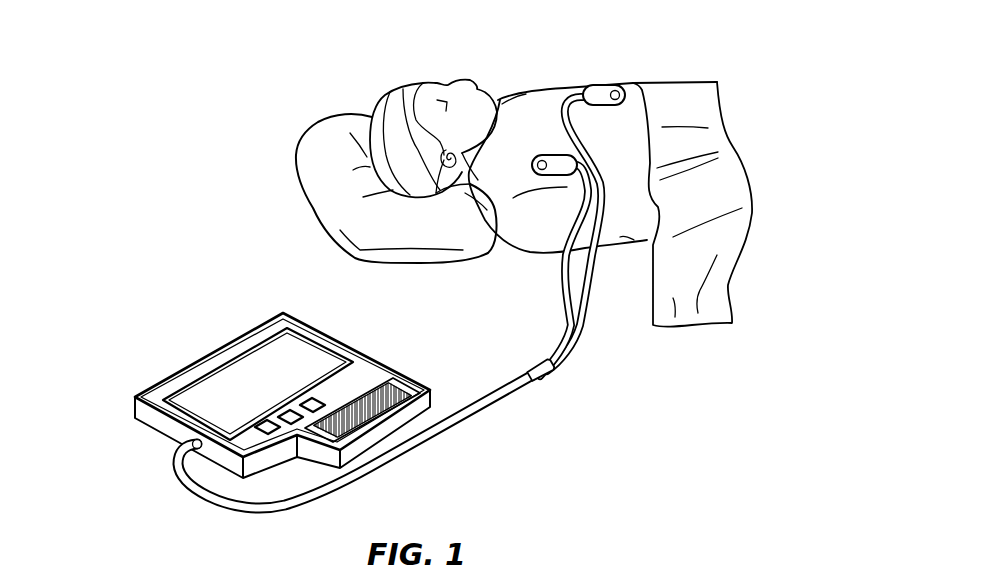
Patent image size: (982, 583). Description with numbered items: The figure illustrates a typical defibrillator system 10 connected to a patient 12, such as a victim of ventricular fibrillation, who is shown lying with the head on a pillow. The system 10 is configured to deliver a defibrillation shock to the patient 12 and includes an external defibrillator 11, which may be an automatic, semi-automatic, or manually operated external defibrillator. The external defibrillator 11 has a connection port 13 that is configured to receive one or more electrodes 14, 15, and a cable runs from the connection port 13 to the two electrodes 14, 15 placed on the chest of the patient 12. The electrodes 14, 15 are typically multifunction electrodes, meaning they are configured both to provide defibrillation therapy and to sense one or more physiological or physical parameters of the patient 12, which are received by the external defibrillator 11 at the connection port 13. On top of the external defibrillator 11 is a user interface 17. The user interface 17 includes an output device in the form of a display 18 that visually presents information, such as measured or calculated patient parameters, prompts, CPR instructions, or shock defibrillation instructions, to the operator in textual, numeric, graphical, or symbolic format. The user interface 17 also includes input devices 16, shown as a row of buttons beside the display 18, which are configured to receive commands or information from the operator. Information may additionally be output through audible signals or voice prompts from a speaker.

The defibrillator system 10 is at (284, 113).
The external defibrillator 11 is at (288, 373).
The patient 12 is at (523, 89).
The connection port 13 is at (168, 440).
The electrode 14 is at (616, 87).
The electrode 15 is at (531, 164).
The input devices 16 is at (265, 419).
The user interface 17 is at (350, 383).
The display 18 is at (212, 386).